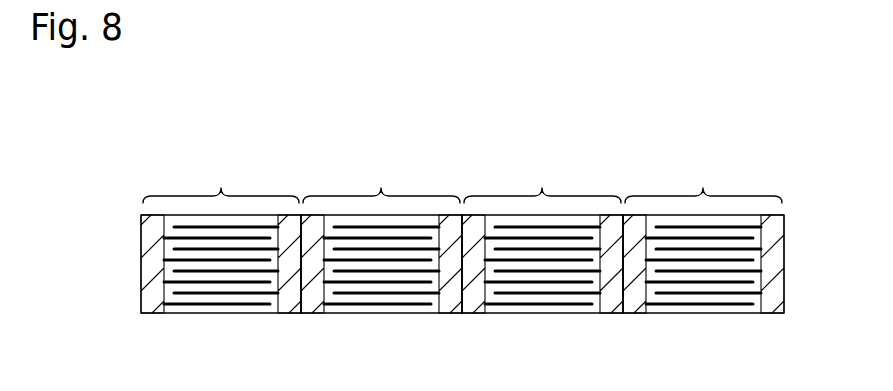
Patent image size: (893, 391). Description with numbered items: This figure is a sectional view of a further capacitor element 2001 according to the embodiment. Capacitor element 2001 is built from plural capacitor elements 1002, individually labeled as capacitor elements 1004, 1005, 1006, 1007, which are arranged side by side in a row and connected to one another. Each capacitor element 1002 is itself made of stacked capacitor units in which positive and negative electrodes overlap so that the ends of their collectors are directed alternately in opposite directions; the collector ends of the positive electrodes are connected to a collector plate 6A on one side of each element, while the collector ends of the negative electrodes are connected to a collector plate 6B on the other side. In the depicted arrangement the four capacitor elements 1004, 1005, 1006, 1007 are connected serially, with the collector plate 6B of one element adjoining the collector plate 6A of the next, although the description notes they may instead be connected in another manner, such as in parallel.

The capacitor element 1002 is at (455, 233).
The capacitor element 1004 is at (221, 188).
The capacitor element 1005 is at (381, 188).
The capacitor element 1006 is at (542, 188).
The capacitor element 1007 is at (703, 188).
The capacitor element 2001 is at (722, 170).
The collector plate 6A is at (150, 306).
The collector plate 6B is at (287, 307).